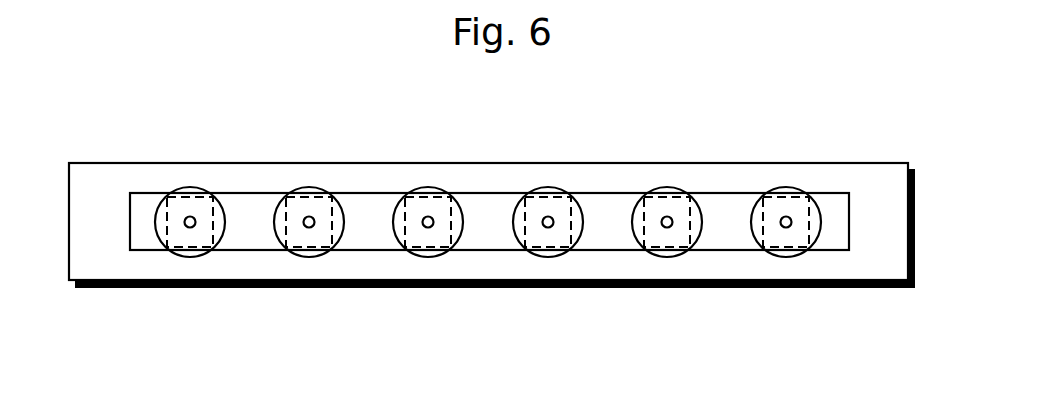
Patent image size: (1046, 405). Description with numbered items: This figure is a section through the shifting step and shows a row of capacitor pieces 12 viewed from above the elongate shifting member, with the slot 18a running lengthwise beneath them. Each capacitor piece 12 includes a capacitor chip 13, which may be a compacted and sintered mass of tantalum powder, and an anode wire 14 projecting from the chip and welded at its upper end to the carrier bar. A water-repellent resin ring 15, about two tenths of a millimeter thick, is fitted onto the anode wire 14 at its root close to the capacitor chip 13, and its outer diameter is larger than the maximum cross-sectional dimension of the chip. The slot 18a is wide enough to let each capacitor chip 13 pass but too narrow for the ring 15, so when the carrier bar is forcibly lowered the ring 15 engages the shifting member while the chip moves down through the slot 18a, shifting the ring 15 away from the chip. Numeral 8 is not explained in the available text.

The base plate 8 is at (481, 162).
The capacitor piece 12 is at (788, 258).
The capacitor chip 13 is at (813, 233).
The anode wire 14 is at (785, 216).
The water-repellent resin ring 15 is at (797, 207).
The slot 18a is at (735, 233).